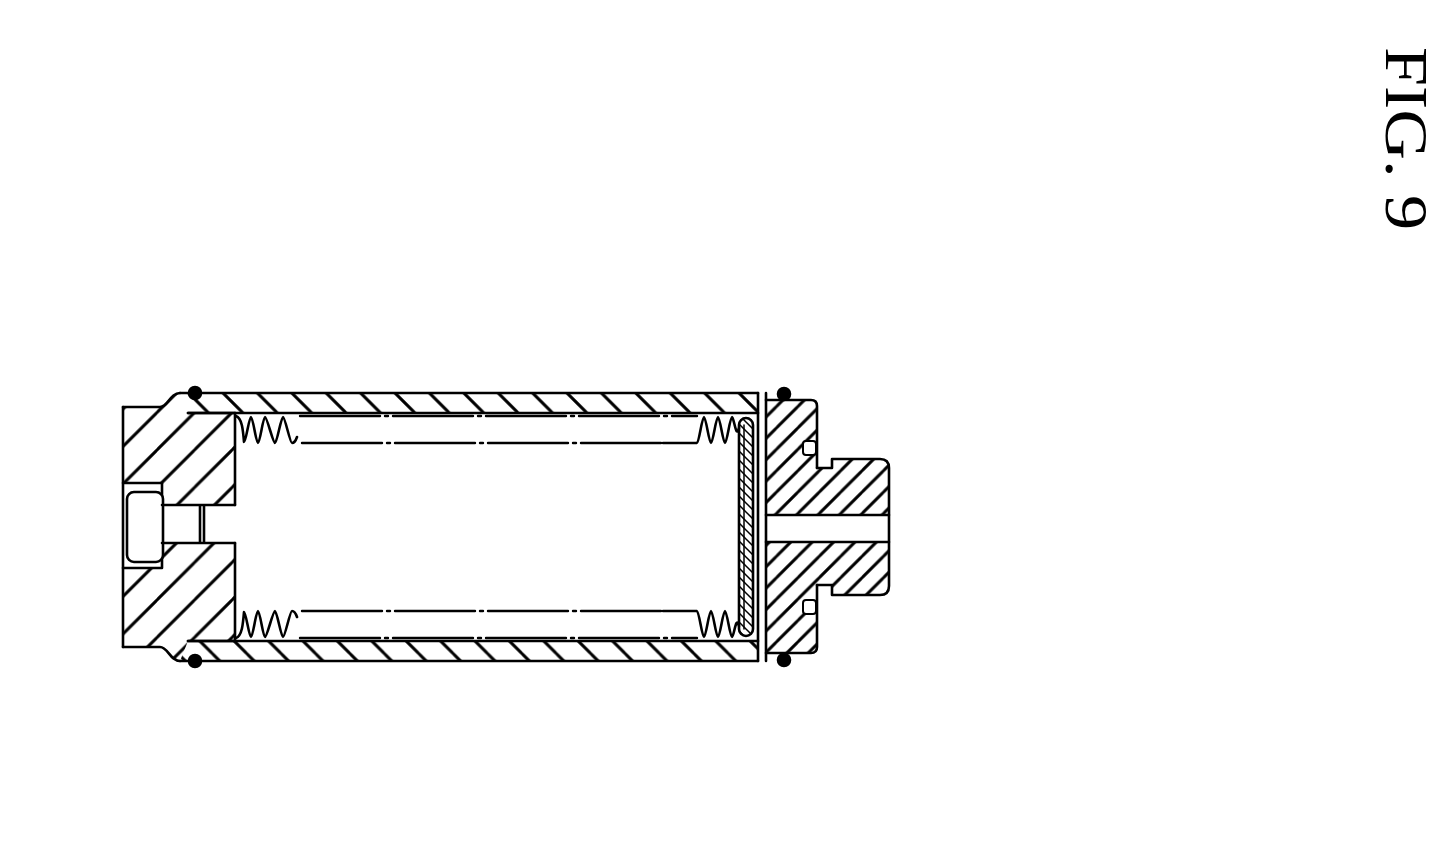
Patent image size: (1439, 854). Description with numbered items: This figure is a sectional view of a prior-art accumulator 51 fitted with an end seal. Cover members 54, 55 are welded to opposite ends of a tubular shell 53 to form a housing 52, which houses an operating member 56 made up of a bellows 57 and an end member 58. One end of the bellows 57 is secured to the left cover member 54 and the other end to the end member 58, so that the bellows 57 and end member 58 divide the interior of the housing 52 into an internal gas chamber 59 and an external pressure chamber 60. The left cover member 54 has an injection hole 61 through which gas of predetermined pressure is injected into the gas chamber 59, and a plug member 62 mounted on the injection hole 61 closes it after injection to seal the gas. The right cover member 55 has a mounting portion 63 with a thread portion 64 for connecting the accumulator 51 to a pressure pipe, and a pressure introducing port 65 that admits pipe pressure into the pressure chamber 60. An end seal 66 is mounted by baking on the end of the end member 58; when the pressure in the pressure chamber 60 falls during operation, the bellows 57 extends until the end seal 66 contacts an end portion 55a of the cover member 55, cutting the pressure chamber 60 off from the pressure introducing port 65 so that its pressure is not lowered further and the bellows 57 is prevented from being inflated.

The accumulator 51 is at (497, 358).
The housing 52 is at (553, 392).
The tubular shell 53 is at (402, 395).
The cover member 54 is at (173, 420).
The cover member 55 is at (808, 396).
The end portion 55a is at (740, 498).
The operating member 56 is at (598, 625).
The bellows 57 is at (277, 640).
The end member 58 is at (783, 610).
The gas chamber 59 is at (477, 537).
The pressure chamber 60 is at (760, 395).
The injection hole 61 is at (222, 530).
The plug member 62 is at (188, 530).
The mounting portion 63 is at (872, 497).
The thread portion 64 is at (866, 460).
The pressure introducing port 65 is at (862, 597).
The end seal 66 is at (768, 585).